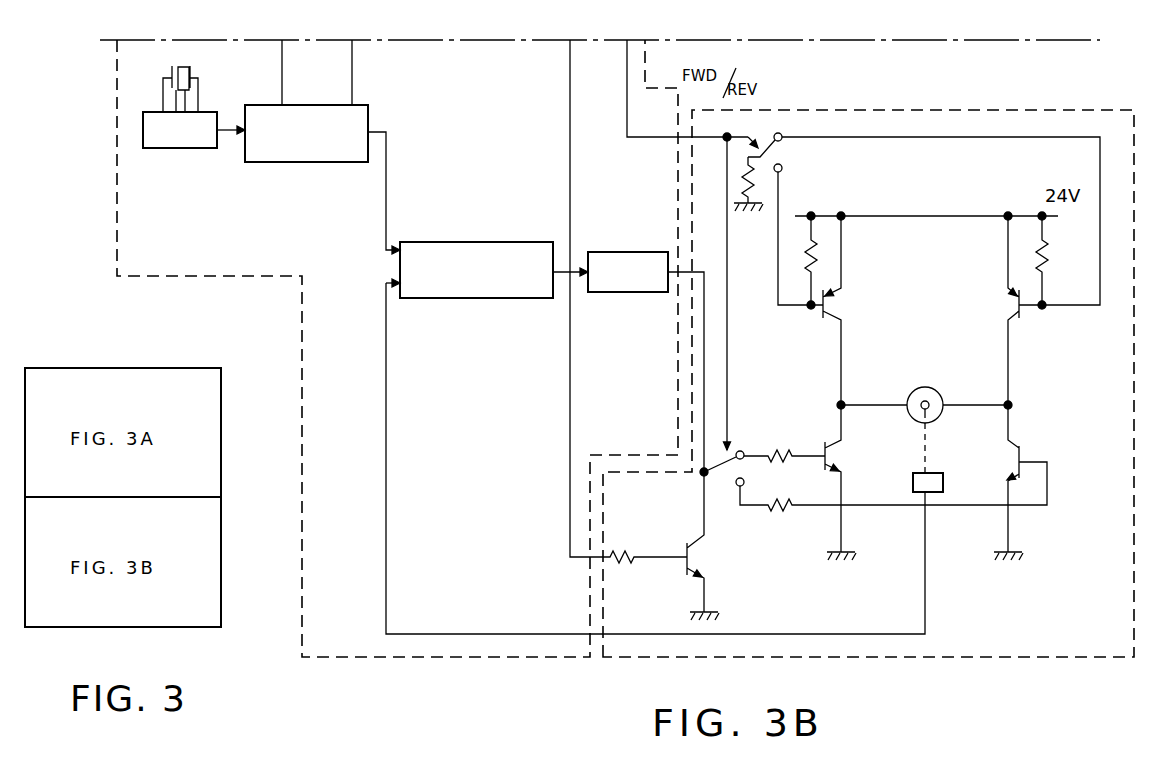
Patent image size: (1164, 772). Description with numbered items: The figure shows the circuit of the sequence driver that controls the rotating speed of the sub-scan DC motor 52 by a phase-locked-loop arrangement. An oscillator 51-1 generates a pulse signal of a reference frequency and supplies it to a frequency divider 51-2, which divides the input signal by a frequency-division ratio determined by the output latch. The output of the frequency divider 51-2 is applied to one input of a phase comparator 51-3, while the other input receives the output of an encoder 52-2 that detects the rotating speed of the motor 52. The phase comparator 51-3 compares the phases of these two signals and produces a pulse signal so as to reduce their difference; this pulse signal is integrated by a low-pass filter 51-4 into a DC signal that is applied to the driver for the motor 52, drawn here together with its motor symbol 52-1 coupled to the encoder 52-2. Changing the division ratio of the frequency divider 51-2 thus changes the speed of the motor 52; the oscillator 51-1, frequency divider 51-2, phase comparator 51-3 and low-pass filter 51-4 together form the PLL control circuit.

The oscillator 51-1 is at (177, 150).
The frequency divider 51-2 is at (297, 162).
The phase comparator 51-3 is at (460, 298).
The low-pass filter 51-4 is at (612, 292).
The sub-scan DC motor 52 is at (964, 111).
The motor 52-1 is at (925, 387).
The encoder 52-2 is at (941, 473).